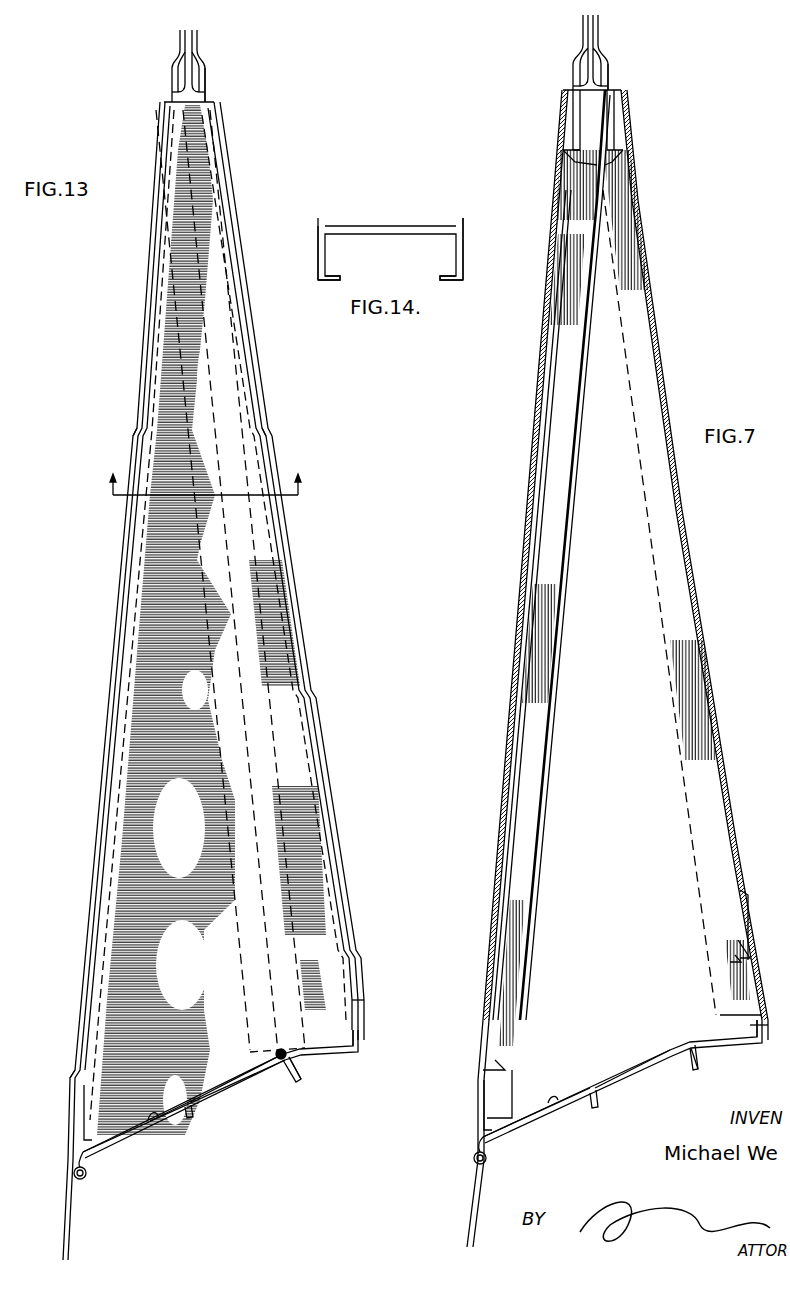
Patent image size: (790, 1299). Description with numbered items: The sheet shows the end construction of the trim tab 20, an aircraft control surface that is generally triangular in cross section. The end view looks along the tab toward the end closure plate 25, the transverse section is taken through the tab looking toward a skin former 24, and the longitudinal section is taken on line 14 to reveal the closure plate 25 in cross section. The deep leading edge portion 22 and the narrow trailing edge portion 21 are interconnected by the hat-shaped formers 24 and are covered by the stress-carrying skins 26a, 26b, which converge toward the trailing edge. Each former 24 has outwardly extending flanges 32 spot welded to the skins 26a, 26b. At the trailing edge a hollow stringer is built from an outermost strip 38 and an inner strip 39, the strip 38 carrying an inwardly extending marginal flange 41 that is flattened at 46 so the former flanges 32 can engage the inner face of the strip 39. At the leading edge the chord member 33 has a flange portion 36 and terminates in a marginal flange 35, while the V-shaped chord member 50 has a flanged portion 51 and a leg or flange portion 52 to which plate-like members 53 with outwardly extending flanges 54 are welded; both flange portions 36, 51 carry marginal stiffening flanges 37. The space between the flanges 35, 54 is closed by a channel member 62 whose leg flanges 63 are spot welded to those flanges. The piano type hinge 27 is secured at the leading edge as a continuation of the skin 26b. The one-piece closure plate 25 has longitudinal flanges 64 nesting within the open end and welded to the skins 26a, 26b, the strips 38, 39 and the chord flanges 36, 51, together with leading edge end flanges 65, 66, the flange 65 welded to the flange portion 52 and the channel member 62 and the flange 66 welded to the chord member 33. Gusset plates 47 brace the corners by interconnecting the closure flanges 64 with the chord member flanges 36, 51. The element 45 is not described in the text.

In FIG. 13, the section line 14— 14 is at (205, 476).
In FIG. 13, the trim tab 20 is at (298, 622).
In FIG. 7, the trim tab 20 is at (688, 536).
In FIG. 13, the trailing edge portion 21 is at (208, 77).
In FIG. 7, the trailing edge portion 21 is at (612, 66).
In FIG. 13, the leading edge portion 22 is at (312, 1057).
In FIG. 7, the leading edge portion 22 is at (726, 1050).
In FIG. 7, the skin former 24 is at (690, 706).
In FIG. 13, the end closure plate 25 is at (192, 833).
In FIG. 14, the end closure plate 25 is at (397, 228).
In FIG. 13, the skin 26a is at (290, 590).
In FIG. 14, the skin 26a is at (464, 222).
In FIG. 7, the skin 26a is at (707, 628).
In FIG. 13, the skin 26b is at (122, 626).
In FIG. 14, the skin 26b is at (316, 228).
In FIG. 7, the skin 26b is at (518, 663).
In FIG. 13, the piano type hinge 27 is at (86, 1178).
In FIG. 7, the piano type hinge 27 is at (486, 1165).
In FIG. 7, the former flange 32 is at (722, 838).
In FIG. 13, the chord member 33 is at (352, 1050).
In FIG. 7, the chord member 33 is at (744, 1042).
In FIG. 13, the marginal flange 35 is at (303, 1078).
In FIG. 7, the marginal flange 35 is at (698, 1069).
In FIG. 13, the flange portion 36 is at (351, 1000).
In FIG. 7, the flange portion 36 is at (754, 1028).
In FIG. 7, the marginal stiffening flange 37 is at (730, 960).
In FIG. 13, the outermost strip 38 is at (176, 60).
In FIG. 7, the outermost strip 38 is at (576, 52).
In FIG. 13, the strip 39 is at (180, 80).
In FIG. 7, the strip 39 is at (580, 70).
In FIG. 7, the marginal flange 41 is at (596, 142).
In FIG. 7, the clip 45 is at (752, 932).
In FIG. 7, the flattened region 46 is at (630, 165).
In FIG. 13, the gusset plate 47 is at (232, 188).
In FIG. 13, the chord member 50 is at (96, 1170).
In FIG. 7, the chord member 50 is at (486, 1143).
In FIG. 13, the flanged portion 51 is at (80, 1134).
In FIG. 7, the flanged portion 51 is at (480, 1126).
In FIG. 13, the flange portion 52 is at (128, 1150).
In FIG. 7, the flange portion 52 is at (542, 1112).
In FIG. 13, the plate-like member 53 is at (140, 1128).
In FIG. 7, the plate-like member 53 is at (545, 1108).
In FIG. 13, the flange 54 is at (188, 1122).
In FIG. 7, the flange 54 is at (592, 1108).
In FIG. 13, the channel member 62 is at (228, 1084).
In FIG. 7, the channel member 62 is at (636, 1066).
In FIG. 13, the channel member leg flange 63 is at (293, 1082).
In FIG. 7, the channel member leg flange 63 is at (690, 1062).
In FIG. 14, the longitudinal flange 64 is at (329, 276).
In FIG. 13, the leading edge end flange 65 is at (212, 1094).
In FIG. 13, the leading edge end flange 66 is at (333, 1048).